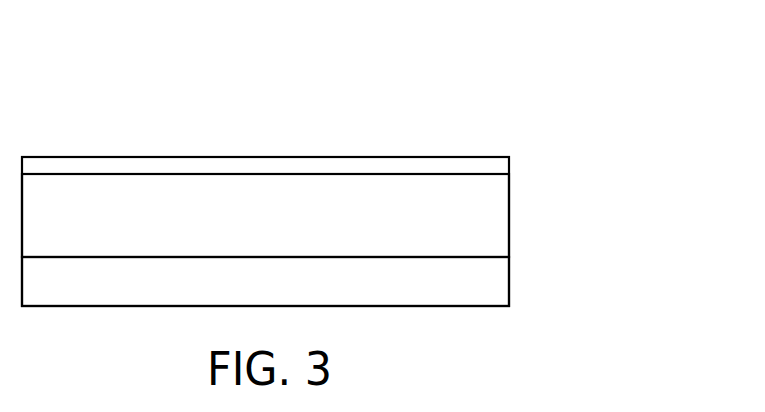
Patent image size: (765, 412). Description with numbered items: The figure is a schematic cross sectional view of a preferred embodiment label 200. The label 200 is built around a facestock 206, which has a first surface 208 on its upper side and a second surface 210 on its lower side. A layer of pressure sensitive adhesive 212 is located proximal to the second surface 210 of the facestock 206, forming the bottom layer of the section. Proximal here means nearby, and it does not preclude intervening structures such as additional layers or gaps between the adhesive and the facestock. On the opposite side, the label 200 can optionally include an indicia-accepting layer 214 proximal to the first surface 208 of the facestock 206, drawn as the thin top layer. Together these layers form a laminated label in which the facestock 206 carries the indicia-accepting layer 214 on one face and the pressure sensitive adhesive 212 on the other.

The label 200 is at (548, 101).
The facestock 206 is at (502, 220).
The first surface 208 is at (352, 167).
The second surface 210 is at (427, 268).
The layer of pressure sensitive adhesive 212 is at (502, 285).
The indicia-accepting layer 214 is at (67, 170).